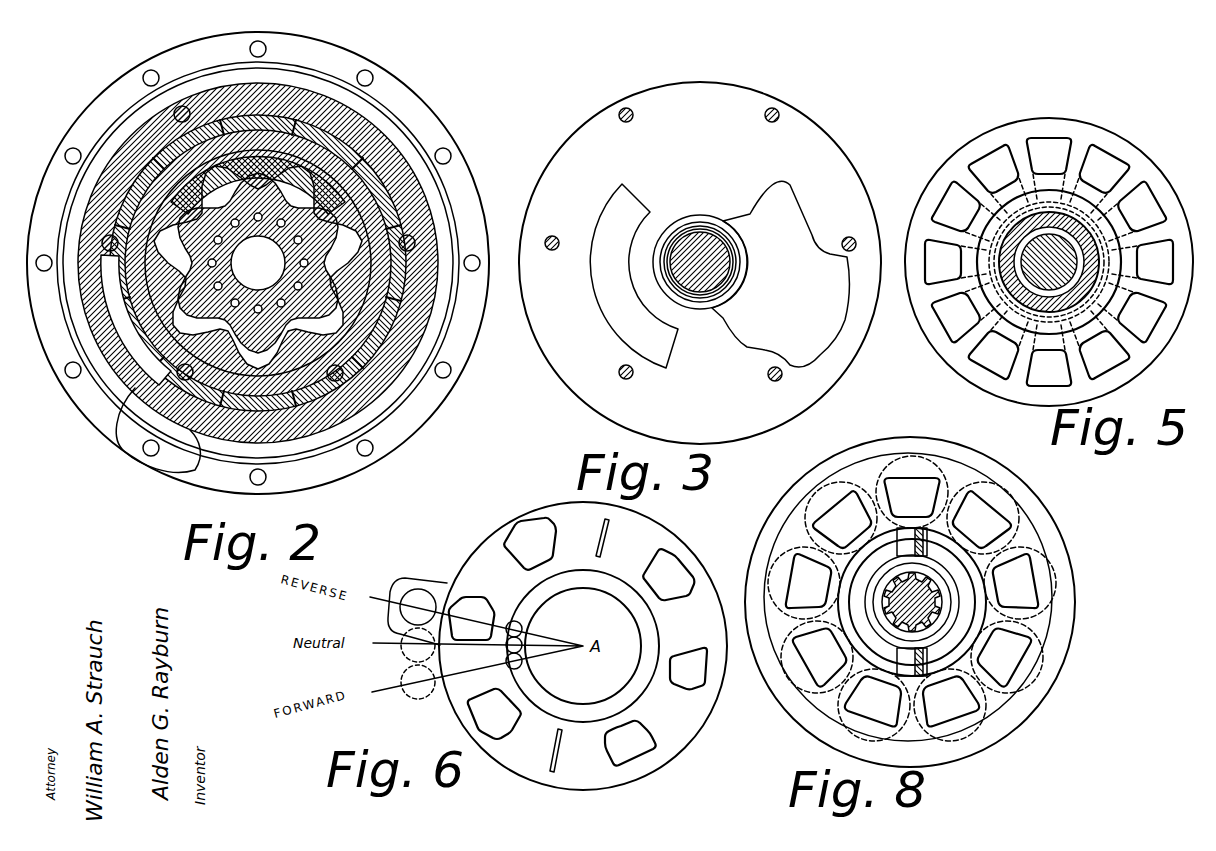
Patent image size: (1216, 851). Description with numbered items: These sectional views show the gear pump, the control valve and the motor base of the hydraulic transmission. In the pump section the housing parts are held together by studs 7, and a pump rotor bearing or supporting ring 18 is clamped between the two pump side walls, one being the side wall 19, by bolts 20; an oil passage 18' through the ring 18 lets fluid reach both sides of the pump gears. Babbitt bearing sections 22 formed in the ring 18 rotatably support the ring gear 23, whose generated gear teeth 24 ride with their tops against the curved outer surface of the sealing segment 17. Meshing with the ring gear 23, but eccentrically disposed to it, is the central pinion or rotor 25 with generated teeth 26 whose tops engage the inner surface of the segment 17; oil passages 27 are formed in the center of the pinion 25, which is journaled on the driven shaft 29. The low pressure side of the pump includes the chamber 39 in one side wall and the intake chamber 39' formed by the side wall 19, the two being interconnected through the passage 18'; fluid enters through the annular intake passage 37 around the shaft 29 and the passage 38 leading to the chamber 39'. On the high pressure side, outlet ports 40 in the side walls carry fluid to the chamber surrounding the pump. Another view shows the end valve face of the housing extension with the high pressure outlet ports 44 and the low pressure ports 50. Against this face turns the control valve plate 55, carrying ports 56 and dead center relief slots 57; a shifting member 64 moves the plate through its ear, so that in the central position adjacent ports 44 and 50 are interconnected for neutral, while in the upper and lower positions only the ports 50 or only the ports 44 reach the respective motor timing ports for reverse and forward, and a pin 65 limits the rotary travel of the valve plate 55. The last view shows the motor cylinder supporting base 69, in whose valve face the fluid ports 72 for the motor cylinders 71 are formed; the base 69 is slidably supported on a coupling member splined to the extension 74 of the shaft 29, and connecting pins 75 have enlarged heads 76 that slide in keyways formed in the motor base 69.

In FIG. 2, the studs 7 is at (450, 153).
In FIG. 2, the sealing segment 17 is at (370, 128).
In FIG. 2, the pump rotor bearing or supporting ring 18 is at (412, 263).
In FIG. 2, the oil passage 18' is at (153, 438).
In FIG. 3, the pump side wall 19 is at (850, 150).
In FIG. 2, the bolts 20 is at (373, 82).
In FIG. 3, the bolts 20 is at (626, 108).
In FIG. 2, the Babbitt bearing sections 22 is at (390, 200).
In FIG. 2, the ring gear 23 is at (450, 330).
In FIG. 2, the generated gear teeth 24 is at (412, 265).
In FIG. 2, the central pinion or rotor 25 is at (180, 222).
In FIG. 2, the generated teeth 26 is at (325, 240).
In FIG. 2, the oil passages 27 is at (185, 470).
In FIG. 3, the driven shaft 29 is at (690, 235).
In FIG. 3, the annular circular fluid intake passage 37 is at (715, 228).
In FIG. 3, the passage 38 is at (751, 274).
In FIG. 2, the chamber or recess 39 is at (102, 320).
In FIG. 5, the low pressure or intake chamber 39' is at (848, 264).
In FIG. 2, the outlet ports 40 is at (433, 290).
In FIG. 3, the outlet ports 40 is at (620, 290).
In FIG. 5, the high pressure fluid outlet ports or passages 44 is at (1012, 140).
In FIG. 5, the low pressure ports 50 is at (1000, 155).
In FIG. 6, the control valve plate 55 is at (665, 520).
In FIG. 6, the ports 56 is at (525, 545).
In FIG. 6, the dead center relief ports or slots 57 is at (607, 520).
In FIG. 6, the shifting member 64 is at (400, 590).
In FIG. 6, the pin 65 is at (425, 580).
In FIG. 8, the motor cylinder supporting base 69 is at (1075, 540).
In FIG. 8, the motor cylinders 71 is at (975, 480).
In FIG. 8, the fluid ports 72 is at (912, 487).
In FIG. 8, the extension 74 is at (950, 610).
In FIG. 8, the connecting pins 75 is at (965, 508).
In FIG. 8, the enlarged sections or heads 76 is at (897, 540).